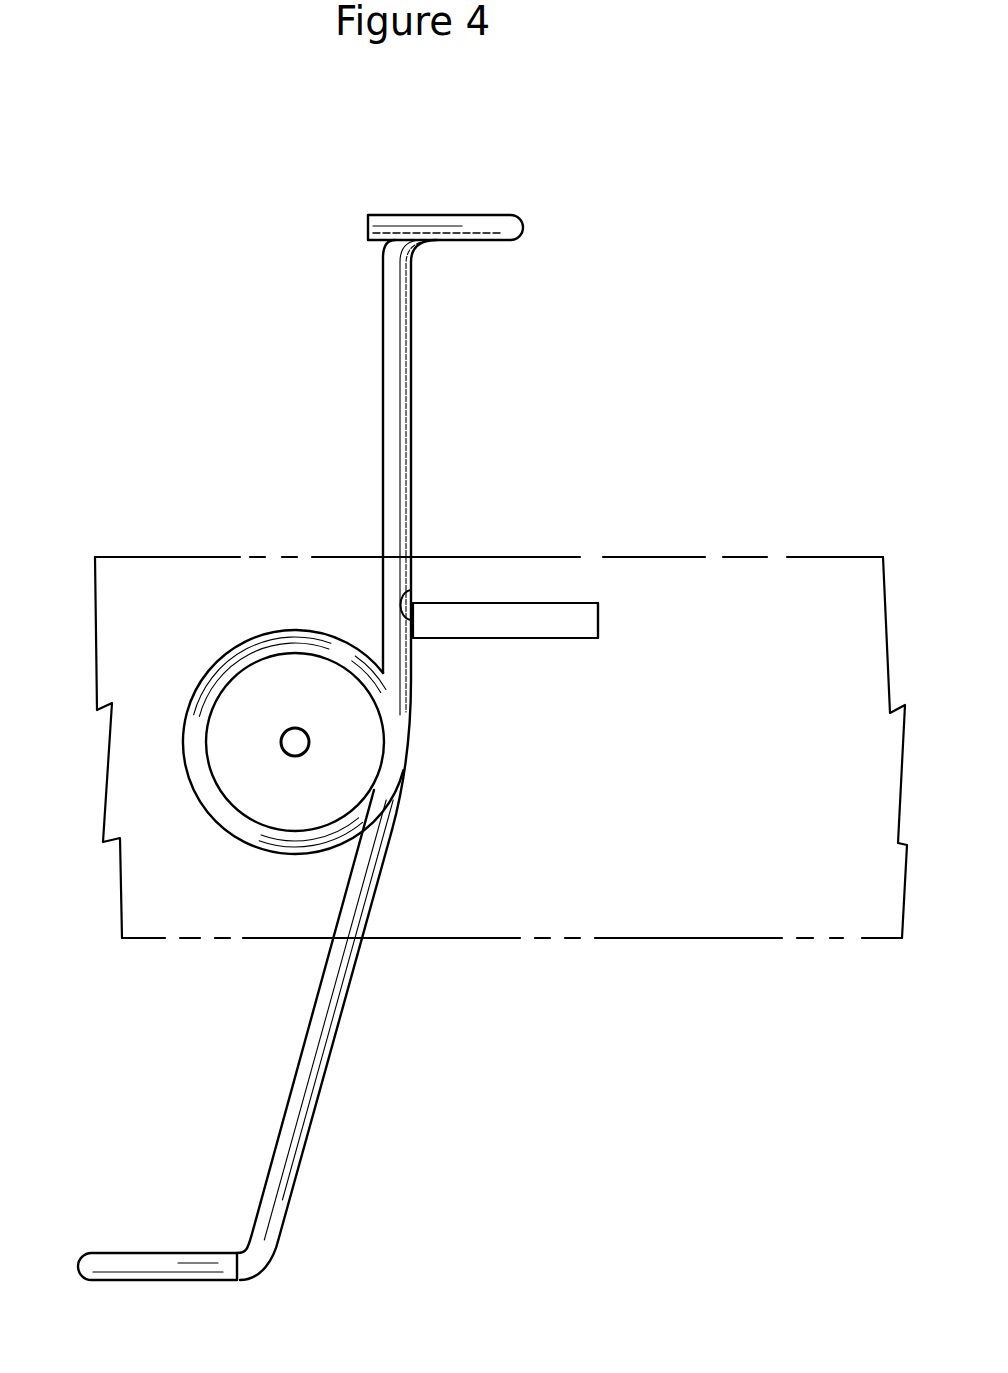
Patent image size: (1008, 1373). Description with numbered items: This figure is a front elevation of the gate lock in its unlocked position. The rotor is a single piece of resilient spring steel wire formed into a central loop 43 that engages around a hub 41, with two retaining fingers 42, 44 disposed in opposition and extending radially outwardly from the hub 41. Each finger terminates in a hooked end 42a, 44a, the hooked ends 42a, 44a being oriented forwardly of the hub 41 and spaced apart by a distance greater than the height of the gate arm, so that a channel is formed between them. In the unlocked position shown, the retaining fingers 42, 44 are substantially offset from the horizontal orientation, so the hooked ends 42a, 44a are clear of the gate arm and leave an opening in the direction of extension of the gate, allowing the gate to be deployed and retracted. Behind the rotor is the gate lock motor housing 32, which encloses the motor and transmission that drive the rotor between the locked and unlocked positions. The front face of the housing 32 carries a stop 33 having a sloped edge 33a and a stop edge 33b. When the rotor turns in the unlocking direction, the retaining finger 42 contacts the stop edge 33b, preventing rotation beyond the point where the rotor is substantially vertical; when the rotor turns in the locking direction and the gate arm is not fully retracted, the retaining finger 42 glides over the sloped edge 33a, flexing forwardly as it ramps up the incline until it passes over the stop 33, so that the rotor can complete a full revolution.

The gate lock motor housing 32 is at (632, 863).
The stop 33 is at (543, 603).
The sloped edge 33a is at (596, 622).
The stop edge 33b is at (413, 589).
The hub 41 is at (255, 705).
The retaining finger 42 is at (393, 430).
The hooked end 42a is at (420, 227).
The central loop 43 is at (280, 643).
The retaining finger 44 is at (288, 1138).
The hooked end 44a is at (163, 1262).